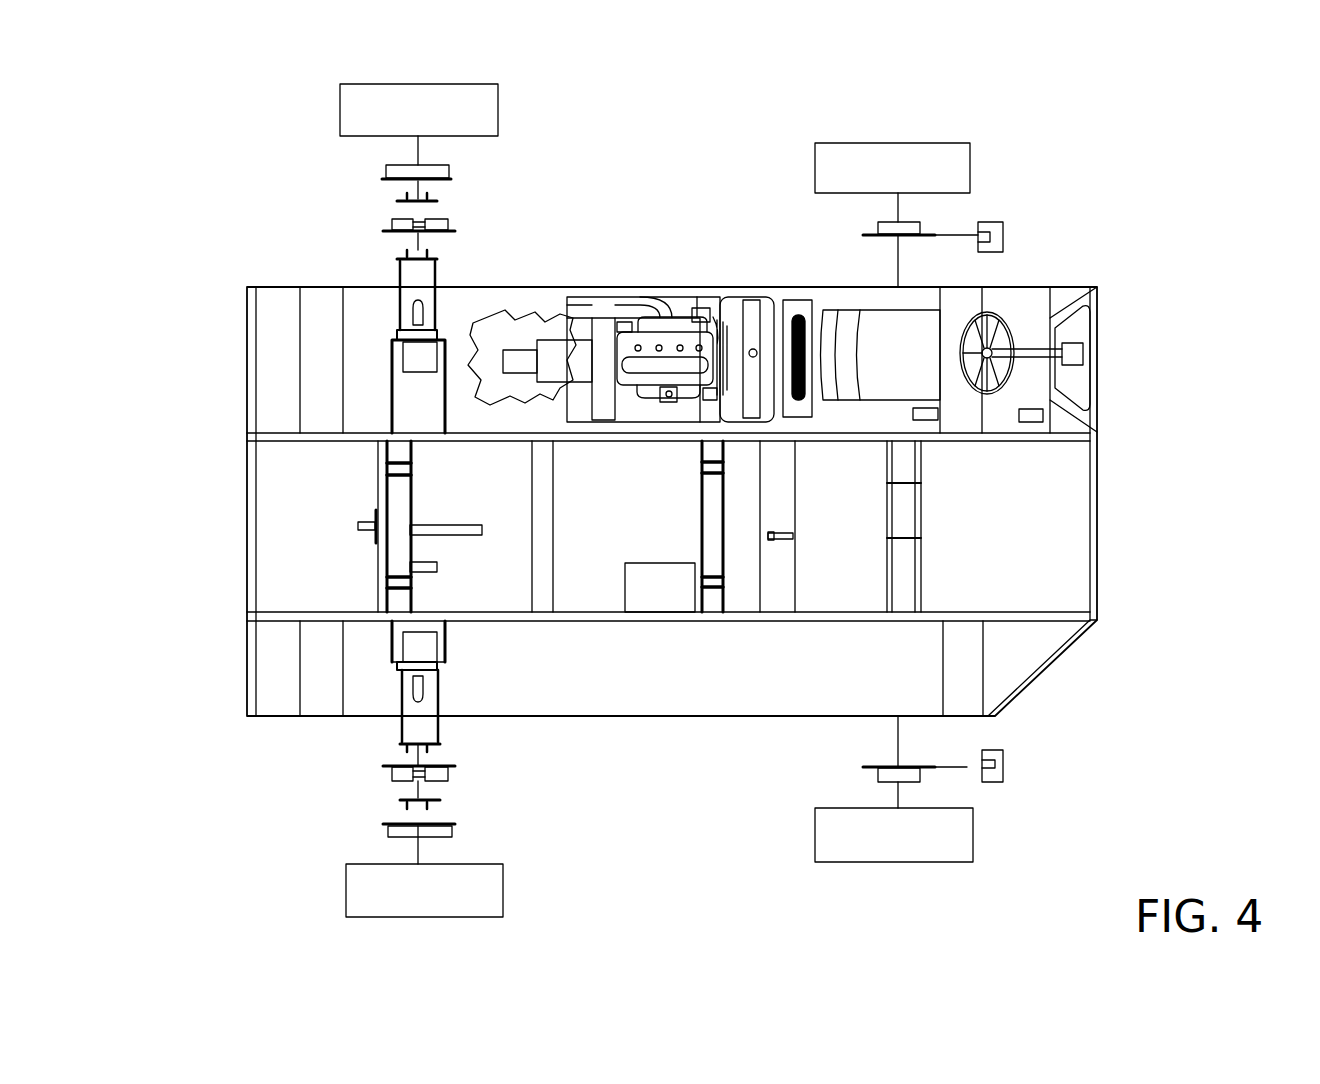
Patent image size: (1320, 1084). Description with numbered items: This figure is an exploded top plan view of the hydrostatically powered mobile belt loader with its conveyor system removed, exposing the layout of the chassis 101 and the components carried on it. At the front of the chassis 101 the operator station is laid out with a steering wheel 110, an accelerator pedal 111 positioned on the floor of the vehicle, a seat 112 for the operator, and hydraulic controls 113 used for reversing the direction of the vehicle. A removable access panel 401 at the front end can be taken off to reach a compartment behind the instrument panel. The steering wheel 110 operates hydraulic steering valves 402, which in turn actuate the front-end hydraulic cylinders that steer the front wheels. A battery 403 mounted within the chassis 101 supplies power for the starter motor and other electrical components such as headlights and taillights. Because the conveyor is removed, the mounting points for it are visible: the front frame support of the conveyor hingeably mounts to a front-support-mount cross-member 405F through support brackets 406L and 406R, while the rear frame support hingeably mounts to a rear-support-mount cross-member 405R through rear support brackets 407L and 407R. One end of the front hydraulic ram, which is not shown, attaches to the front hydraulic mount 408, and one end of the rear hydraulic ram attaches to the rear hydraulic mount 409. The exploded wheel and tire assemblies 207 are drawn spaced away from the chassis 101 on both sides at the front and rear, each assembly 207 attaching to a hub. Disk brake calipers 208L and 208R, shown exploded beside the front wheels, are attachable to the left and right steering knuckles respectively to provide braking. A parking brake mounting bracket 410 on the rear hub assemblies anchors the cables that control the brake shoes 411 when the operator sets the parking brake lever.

The chassis 101 is at (360, 705).
The steering wheel 110 is at (1003, 313).
The accelerator pedal 111 is at (1033, 417).
The seat 112 is at (907, 365).
The hydraulic controls 113 is at (925, 413).
The wheel and tire assembly 207 is at (372, 112).
The disk brake caliper 208R is at (1003, 225).
The disk brake caliper 208L is at (1003, 777).
The access panel 401 is at (1072, 321).
The hydraulic steering valves 402 is at (1074, 352).
The battery 403 is at (680, 597).
The rear-support-mount cross-member 405R is at (397, 540).
The front-support-mount cross-member 405F is at (715, 525).
The support bracket 406R is at (712, 595).
The support bracket 406L is at (712, 480).
The rear support bracket 407L is at (399, 477).
The rear support bracket 407R is at (398, 574).
The front hydraulic mount 408 is at (782, 540).
The rear hydraulic mount 409 is at (357, 526).
The parking brake mounting bracket 410 is at (458, 527).
The brake shoes 411 is at (437, 224).